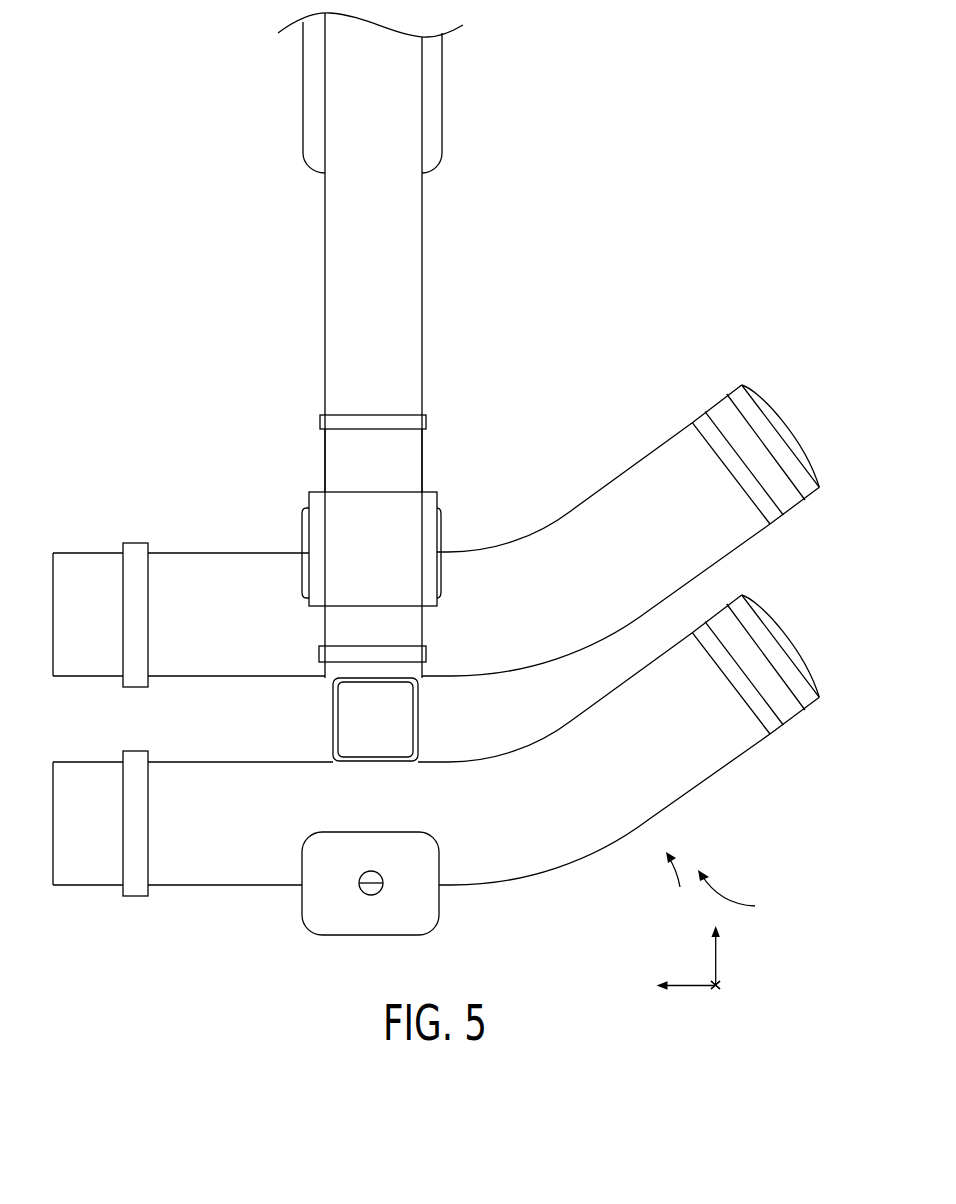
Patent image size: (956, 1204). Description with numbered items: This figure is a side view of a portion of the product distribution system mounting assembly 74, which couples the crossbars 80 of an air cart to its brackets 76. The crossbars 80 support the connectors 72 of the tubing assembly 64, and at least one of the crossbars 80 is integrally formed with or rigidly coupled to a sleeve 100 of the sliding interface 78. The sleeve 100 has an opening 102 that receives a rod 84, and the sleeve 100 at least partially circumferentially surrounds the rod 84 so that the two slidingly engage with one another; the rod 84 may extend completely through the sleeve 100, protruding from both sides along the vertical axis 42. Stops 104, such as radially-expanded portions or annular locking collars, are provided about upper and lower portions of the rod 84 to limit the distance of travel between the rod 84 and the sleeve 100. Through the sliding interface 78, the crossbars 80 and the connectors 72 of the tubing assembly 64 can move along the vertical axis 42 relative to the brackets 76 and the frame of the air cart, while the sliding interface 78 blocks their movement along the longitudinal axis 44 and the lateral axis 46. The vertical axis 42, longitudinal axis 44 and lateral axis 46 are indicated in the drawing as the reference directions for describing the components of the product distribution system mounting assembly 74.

The vertical axis 42 is at (716, 962).
The longitudinal axis 44 is at (692, 987).
The lateral axis 46 is at (716, 993).
The tubing assembly 64 is at (678, 886).
The connector 72 is at (497, 882).
The product distribution system mounting assembly 74 is at (741, 896).
The bracket 76 is at (442, 100).
The sliding interface 78 is at (430, 345).
The crossbar 80 is at (302, 540).
The rod 84 is at (405, 278).
The sleeve 100 is at (438, 502).
The opening 102 is at (405, 488).
The stop 104 is at (400, 415).